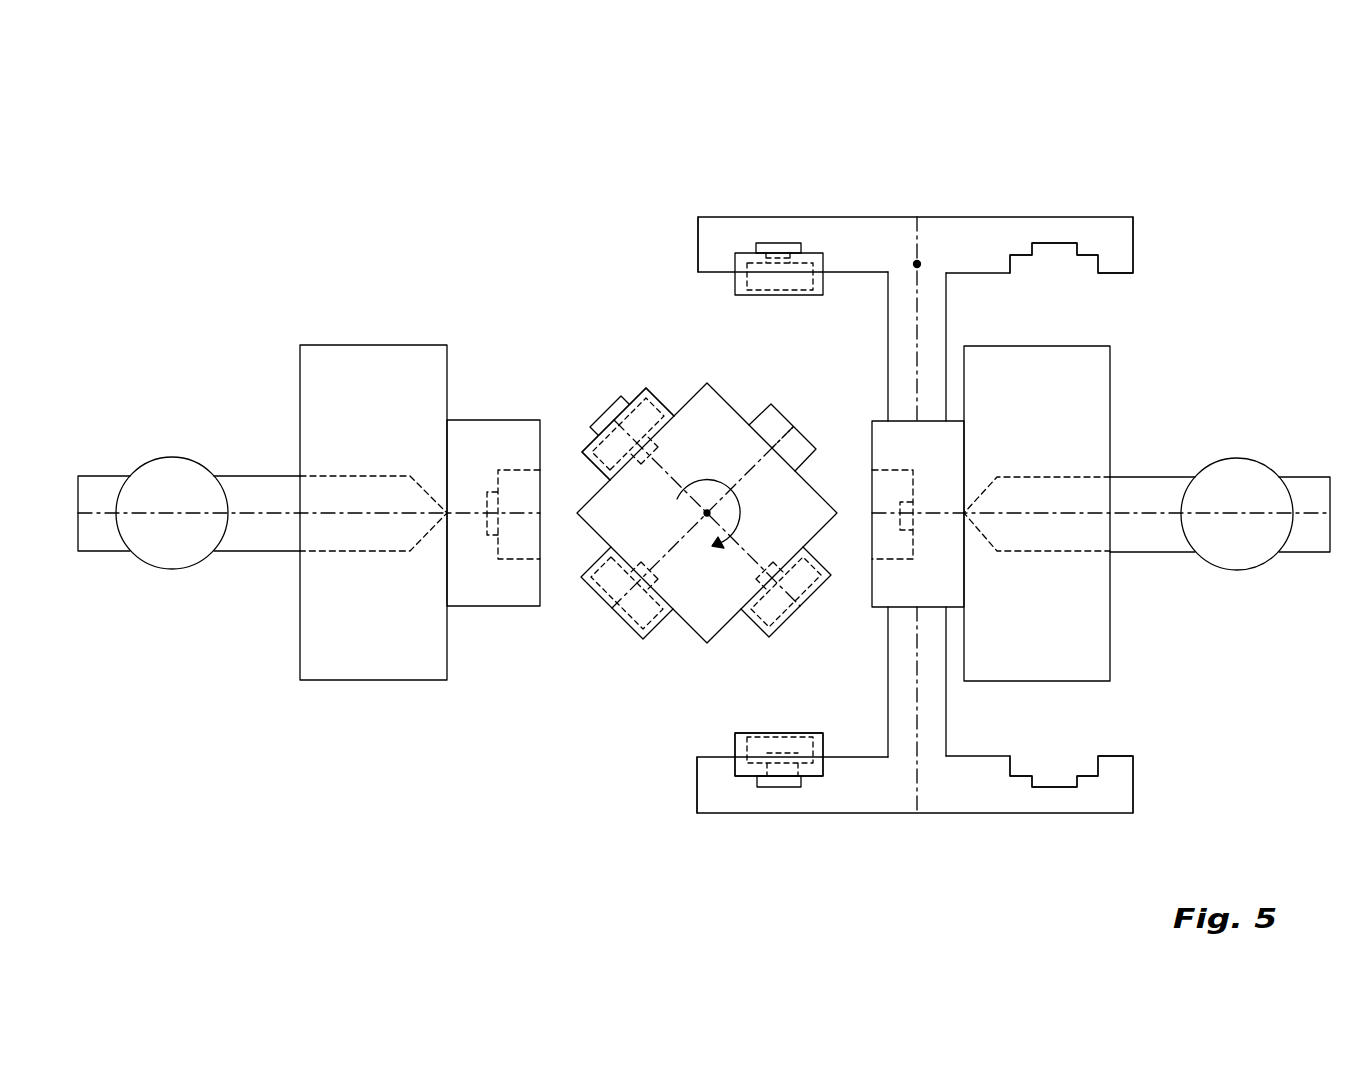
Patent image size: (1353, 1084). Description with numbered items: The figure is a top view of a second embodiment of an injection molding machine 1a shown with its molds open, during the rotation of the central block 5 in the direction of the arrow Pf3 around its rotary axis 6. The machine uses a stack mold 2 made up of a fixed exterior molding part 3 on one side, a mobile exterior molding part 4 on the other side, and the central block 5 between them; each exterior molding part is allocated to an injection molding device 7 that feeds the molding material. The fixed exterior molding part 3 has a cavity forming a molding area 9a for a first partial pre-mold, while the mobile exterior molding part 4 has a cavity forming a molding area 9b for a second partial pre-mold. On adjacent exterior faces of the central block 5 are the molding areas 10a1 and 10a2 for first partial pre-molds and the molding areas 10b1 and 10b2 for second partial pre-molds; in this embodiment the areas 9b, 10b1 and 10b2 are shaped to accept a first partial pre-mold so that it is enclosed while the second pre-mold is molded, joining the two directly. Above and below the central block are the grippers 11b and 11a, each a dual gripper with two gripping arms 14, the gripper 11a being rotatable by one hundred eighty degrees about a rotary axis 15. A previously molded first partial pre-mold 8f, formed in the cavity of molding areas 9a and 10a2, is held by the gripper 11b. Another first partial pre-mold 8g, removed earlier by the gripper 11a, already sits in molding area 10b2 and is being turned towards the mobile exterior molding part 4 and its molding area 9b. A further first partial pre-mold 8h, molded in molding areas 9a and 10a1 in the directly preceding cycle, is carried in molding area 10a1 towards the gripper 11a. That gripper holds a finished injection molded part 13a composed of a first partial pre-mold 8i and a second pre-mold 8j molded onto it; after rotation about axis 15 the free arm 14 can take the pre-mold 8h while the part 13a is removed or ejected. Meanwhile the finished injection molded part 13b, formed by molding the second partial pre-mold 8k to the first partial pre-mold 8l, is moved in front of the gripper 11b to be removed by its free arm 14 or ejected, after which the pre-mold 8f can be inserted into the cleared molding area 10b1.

The injection molding machine 1a is at (1199, 111).
The stack mold 2 is at (500, 226).
The fixed exterior molding part 3 is at (950, 452).
The mobile exterior molding part 4 is at (467, 432).
The central block 5 is at (708, 624).
The rotary axis 6 is at (705, 513).
The injection molding device 7 is at (198, 457).
The first partial pre-mold 8f is at (814, 285).
The first partial pre-mold 8g is at (598, 590).
The first partial pre-mold 8h is at (770, 632).
The first partial pre-mold 8i is at (818, 742).
The second pre-mold 8j is at (767, 787).
The second partial pre-mold 8k is at (597, 428).
The first partial pre-mold 8l is at (660, 405).
The molding area 9a is at (892, 548).
The molding area 9b is at (516, 555).
The molding area 10a1 is at (782, 580).
The molding area 10a2 is at (790, 420).
The molding area 10b1 is at (622, 455).
The molding area 10b2 is at (645, 605).
The gripper 11a is at (897, 805).
The gripper 11b is at (906, 217).
The finished injection molded part 13a is at (734, 750).
The finished injection molded part 13b is at (639, 385).
The gripping arm 14 is at (698, 232).
The rotary axis 15 is at (917, 264).
The rotation direction of the central block Pf3 is at (717, 487).